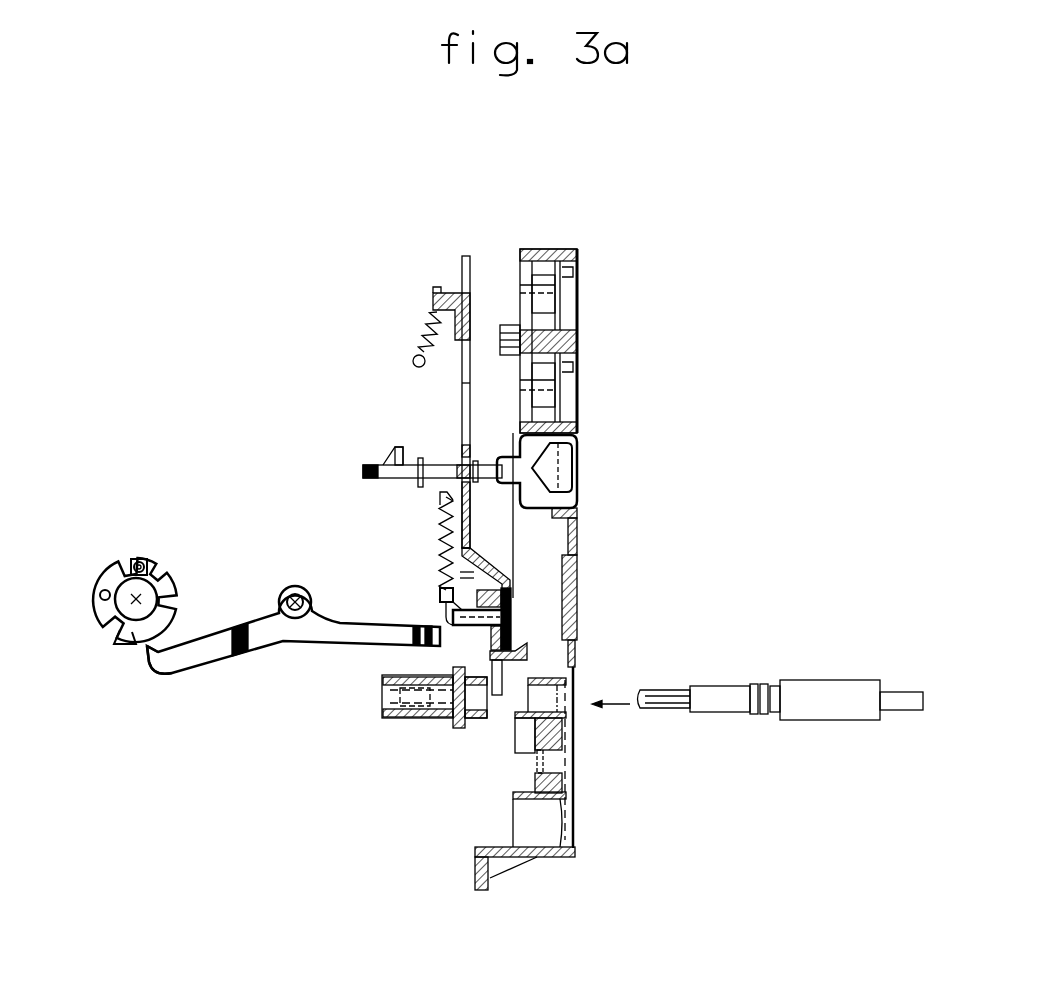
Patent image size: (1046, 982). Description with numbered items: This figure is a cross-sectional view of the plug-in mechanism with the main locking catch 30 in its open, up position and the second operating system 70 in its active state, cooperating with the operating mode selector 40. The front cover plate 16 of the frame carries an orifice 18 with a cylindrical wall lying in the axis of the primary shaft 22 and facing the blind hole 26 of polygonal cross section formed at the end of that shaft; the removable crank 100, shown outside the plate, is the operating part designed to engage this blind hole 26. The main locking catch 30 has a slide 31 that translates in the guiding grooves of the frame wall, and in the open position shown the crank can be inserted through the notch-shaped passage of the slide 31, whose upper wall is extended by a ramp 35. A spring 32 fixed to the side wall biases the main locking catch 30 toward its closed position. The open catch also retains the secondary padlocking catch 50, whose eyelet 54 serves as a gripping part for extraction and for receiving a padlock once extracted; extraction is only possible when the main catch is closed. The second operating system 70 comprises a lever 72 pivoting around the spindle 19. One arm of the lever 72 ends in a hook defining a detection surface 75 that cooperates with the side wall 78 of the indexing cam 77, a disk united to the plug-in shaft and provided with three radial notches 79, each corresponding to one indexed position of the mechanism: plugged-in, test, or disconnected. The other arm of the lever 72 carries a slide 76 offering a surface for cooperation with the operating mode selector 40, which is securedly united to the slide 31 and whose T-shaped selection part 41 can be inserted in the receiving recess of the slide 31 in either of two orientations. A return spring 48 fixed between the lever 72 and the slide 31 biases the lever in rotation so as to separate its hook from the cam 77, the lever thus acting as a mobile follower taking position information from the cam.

The front cover plate 16 is at (560, 350).
The orifice 18 is at (560, 695).
The spindle 19 is at (293, 588).
The primary shaft 22 is at (400, 722).
The blind hole 26 is at (480, 723).
The main locking catch 30 is at (478, 308).
The slide 31 is at (455, 298).
The spring 32 is at (437, 313).
The ramp 35 is at (506, 697).
The operating mode selector 40 is at (522, 588).
The selection part 41 is at (508, 628).
The return spring 48 is at (440, 548).
The secondary padlocking catch 50 is at (597, 488).
The eyelet 54 is at (576, 460).
The second operating system 70 is at (235, 697).
The lever 72 is at (335, 636).
The detection surface 75 is at (150, 660).
The slide 76 is at (440, 590).
The indexing cam 77 is at (100, 572).
The side wall 78 is at (170, 623).
The radial notches 79 is at (172, 598).
The crank 100 is at (720, 688).